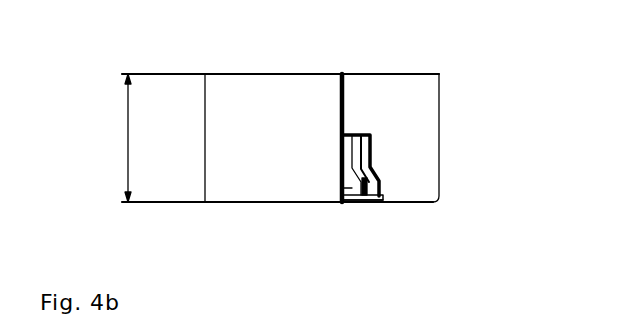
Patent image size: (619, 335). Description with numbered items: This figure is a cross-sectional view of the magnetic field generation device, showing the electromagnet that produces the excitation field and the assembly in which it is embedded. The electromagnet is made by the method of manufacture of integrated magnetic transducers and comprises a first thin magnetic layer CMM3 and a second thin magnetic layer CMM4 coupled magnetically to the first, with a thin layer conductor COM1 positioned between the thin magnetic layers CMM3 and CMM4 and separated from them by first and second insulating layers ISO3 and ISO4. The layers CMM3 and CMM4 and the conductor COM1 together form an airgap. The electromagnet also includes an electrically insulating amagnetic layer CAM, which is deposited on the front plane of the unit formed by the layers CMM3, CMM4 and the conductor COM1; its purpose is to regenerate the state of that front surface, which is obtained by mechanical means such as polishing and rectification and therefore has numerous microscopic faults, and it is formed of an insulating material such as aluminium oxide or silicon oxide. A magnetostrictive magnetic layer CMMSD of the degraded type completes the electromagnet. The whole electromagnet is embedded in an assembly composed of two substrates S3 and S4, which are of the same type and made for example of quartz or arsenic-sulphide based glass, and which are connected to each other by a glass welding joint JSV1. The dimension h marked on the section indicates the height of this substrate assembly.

The height of the bar h is at (133, 138).
The substrate S3 is at (222, 82).
The substrate S4 is at (421, 86).
The glass welding joint JSV1 is at (344, 73).
The second thin magnetic layer CMM4 is at (415, 202).
The magnetostrictive magnetic layer CMMSD is at (340, 161).
The thin layer conductor COM1 is at (368, 185).
The first thin magnetic layer CMM3 is at (343, 151).
The amagnetic layer CAM is at (342, 193).
The first insulating layer ISO3 is at (374, 198).
The second insulating layer ISO4 is at (367, 202).